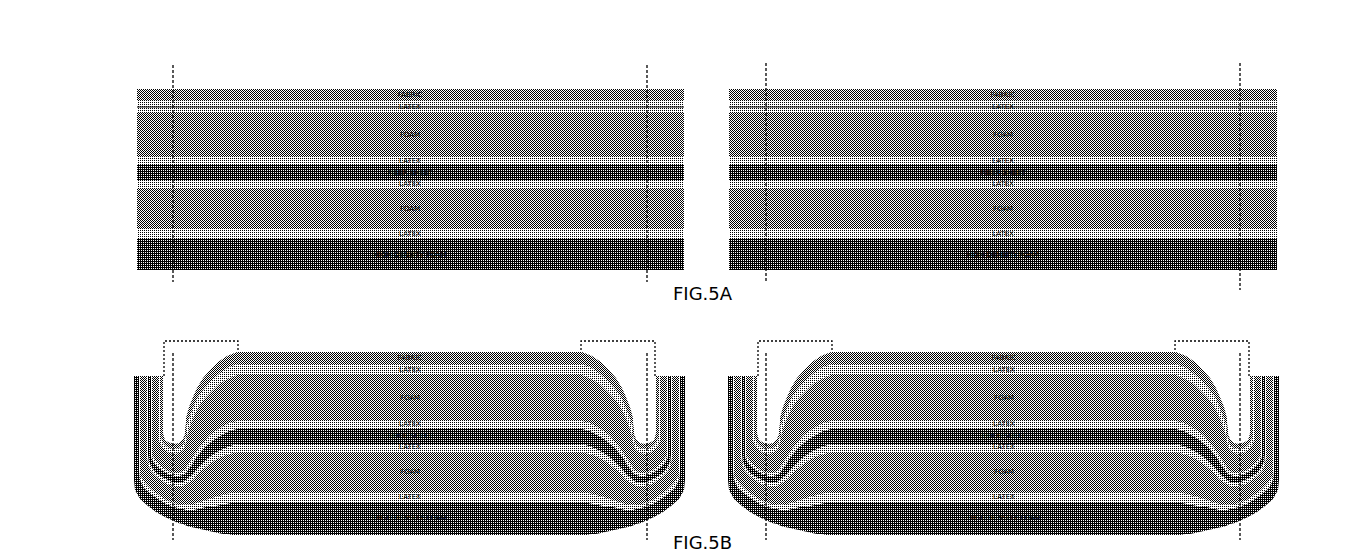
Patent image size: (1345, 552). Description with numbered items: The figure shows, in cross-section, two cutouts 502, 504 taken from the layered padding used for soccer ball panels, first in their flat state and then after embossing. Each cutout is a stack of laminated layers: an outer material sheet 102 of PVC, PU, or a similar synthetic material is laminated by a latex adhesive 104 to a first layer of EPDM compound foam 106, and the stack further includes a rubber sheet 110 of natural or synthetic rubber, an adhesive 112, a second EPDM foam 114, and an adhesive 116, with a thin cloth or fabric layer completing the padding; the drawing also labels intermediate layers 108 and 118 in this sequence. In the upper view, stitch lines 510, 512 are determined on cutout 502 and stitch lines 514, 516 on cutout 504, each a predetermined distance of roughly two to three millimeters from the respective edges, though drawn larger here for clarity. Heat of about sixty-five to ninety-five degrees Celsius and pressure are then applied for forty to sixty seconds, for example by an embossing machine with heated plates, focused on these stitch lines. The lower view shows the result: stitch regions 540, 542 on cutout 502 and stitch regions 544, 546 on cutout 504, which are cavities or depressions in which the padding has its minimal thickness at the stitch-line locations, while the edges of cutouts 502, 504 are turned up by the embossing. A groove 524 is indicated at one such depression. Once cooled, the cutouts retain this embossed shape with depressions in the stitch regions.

In FIG. 5A, the outer material sheet 102 is at (137, 254).
In FIG. 5A, the adhesive 104 is at (137, 233).
In FIG. 5A, the EPDM compound foam 106 is at (137, 207).
In FIG. 5A, the latex layer 108 is at (137, 183).
In FIG. 5A, the rubber sheet 110 is at (137, 170).
In FIG. 5A, the adhesive 112 is at (137, 158).
In FIG. 5A, the EPDM foam 114 is at (137, 130).
In FIG. 5A, the adhesive 116 is at (137, 110).
In FIG. 5A, the fabric layer 118 is at (137, 95).
In FIG. 5A, the cutout 502 is at (250, 84).
In FIG. 5B, the cutout 502 is at (122, 469).
In FIG. 5A, the cutout 504 is at (921, 84).
In FIG. 5B, the cutout 504 is at (1285, 469).
In FIG. 5A, the stitch line 510 is at (173, 78).
In FIG. 5B, the stitch line 510 is at (170, 372).
In FIG. 5A, the stitch line 512 is at (647, 78).
In FIG. 5B, the stitch line 512 is at (648, 372).
In FIG. 5A, the stitch line 514 is at (766, 78).
In FIG. 5B, the stitch line 514 is at (766, 372).
In FIG. 5A, the stitch line 516 is at (1240, 75).
In FIG. 5B, the stitch line 516 is at (1244, 372).
In FIG. 5B, the groove 524 is at (641, 438).
In FIG. 5B, the stitch region 540 is at (203, 341).
In FIG. 5B, the stitch region 542 is at (615, 341).
In FIG. 5B, the stitch region 544 is at (805, 341).
In FIG. 5B, the stitch region 546 is at (1210, 341).